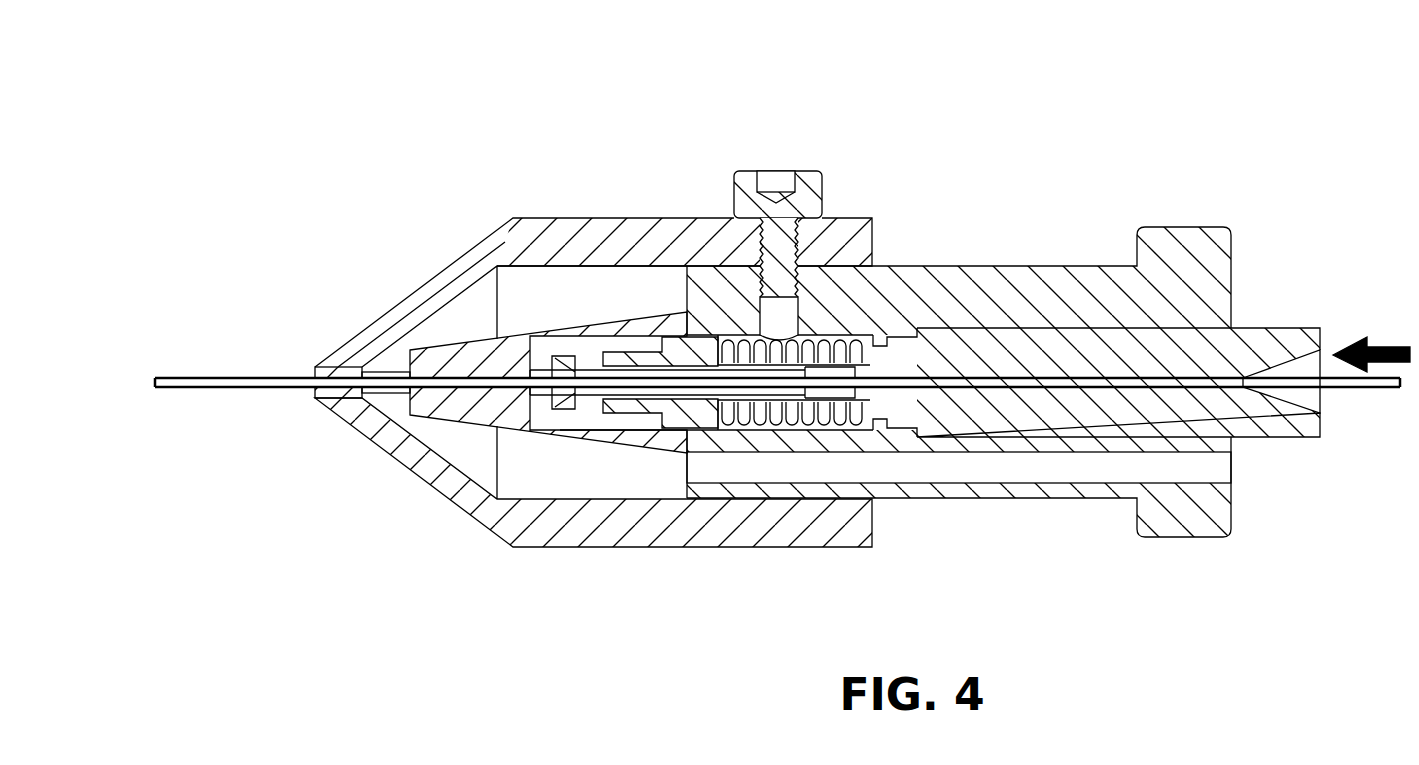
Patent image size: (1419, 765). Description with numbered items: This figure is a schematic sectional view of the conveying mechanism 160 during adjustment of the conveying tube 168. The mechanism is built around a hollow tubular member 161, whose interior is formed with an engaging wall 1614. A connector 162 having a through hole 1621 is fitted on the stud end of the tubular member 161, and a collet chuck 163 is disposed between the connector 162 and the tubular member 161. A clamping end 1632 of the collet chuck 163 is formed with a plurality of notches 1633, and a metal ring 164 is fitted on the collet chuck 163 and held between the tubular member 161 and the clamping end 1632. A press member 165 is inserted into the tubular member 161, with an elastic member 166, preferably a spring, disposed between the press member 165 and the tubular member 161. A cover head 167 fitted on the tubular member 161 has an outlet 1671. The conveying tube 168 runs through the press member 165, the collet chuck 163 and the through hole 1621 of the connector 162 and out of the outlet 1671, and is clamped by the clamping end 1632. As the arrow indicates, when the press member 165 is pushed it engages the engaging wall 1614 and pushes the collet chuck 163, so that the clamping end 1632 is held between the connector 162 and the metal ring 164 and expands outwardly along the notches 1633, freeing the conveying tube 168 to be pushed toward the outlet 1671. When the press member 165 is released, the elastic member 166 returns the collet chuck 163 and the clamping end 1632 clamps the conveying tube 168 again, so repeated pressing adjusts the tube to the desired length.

The conveying mechanism 160 is at (782, 339).
The tubular member 161 is at (1012, 270).
The connector 162 is at (480, 346).
The through hole 1621 is at (352, 370).
The clamping end 1632 is at (592, 447).
The notches 1633 is at (562, 354).
The collet chuck 163 is at (708, 396).
The metal ring 164 is at (642, 335).
The press member 165 is at (1072, 433).
The elastic member 166 is at (805, 410).
The cover head 167 is at (634, 516).
The outlet 1671 is at (316, 365).
The engaging wall 1614 is at (880, 440).
The conveying tube 168 is at (1342, 382).